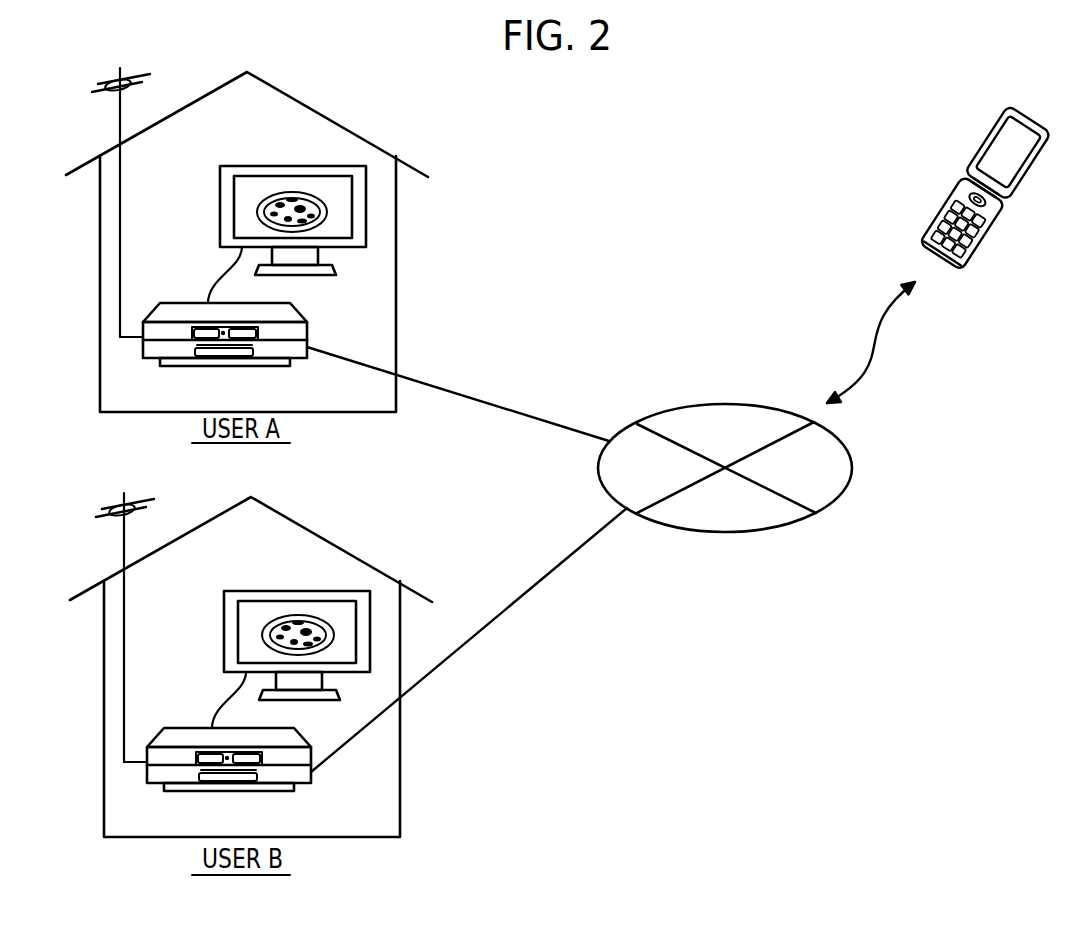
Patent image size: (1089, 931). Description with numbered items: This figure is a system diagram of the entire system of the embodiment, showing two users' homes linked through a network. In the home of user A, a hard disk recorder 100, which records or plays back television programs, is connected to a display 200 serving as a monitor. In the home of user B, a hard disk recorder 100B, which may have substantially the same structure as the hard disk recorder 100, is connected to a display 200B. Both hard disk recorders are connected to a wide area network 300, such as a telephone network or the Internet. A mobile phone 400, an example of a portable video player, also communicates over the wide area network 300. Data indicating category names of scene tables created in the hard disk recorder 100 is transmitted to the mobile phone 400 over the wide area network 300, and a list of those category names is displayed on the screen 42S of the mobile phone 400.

The hard disk recorder 100 is at (192, 303).
The display 200 is at (243, 165).
The hard disk recorder 100B is at (223, 731).
The display 200B is at (297, 616).
The wide area network 300 is at (848, 449).
The mobile phone 400 is at (996, 198).
The screen 42S is at (1020, 140).